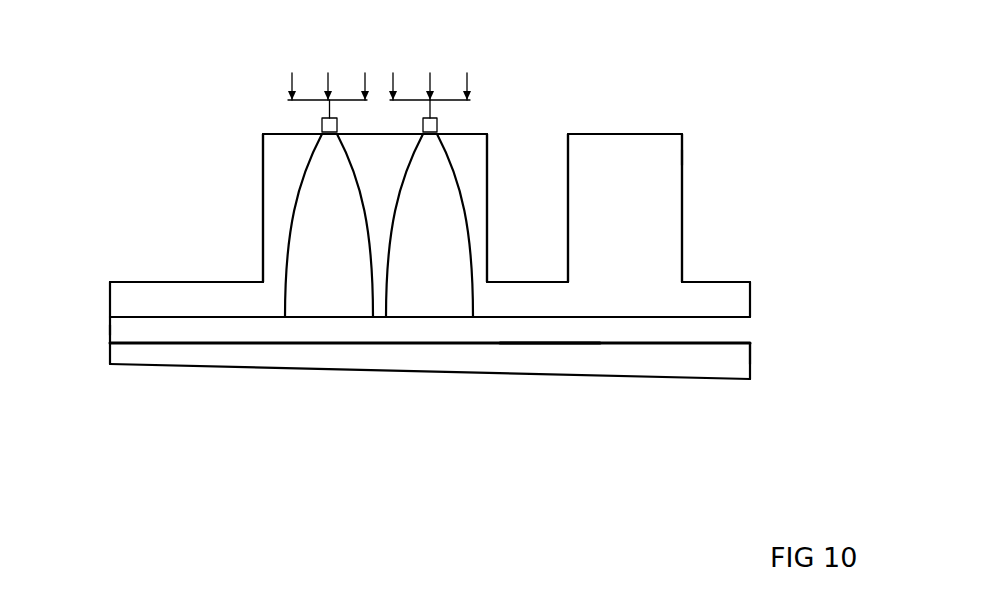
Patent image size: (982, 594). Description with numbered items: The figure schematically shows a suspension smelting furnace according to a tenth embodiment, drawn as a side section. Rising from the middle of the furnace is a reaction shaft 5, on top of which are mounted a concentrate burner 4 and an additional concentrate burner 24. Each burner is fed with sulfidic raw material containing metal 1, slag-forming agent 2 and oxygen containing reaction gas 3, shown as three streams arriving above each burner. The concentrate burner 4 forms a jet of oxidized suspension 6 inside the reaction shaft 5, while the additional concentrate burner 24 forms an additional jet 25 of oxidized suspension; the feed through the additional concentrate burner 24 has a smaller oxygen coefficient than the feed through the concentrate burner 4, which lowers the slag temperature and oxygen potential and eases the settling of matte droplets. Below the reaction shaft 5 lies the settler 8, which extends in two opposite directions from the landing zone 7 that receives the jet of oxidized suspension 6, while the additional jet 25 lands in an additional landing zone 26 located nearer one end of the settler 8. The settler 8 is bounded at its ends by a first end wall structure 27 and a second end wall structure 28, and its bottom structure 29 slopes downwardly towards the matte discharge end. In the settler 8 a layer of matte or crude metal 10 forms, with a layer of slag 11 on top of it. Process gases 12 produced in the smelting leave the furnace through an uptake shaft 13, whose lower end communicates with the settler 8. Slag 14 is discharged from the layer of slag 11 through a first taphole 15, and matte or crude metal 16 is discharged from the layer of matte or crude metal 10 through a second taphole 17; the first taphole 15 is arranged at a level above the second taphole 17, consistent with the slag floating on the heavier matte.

The sulfidic raw material containing metal 1 is at (342, 72).
The slag-forming agent 2 is at (378, 72).
The oxygen containing reaction gas 3 is at (415, 72).
The concentrate burner 4 is at (438, 123).
The reaction shaft 5 is at (263, 155).
The jet of oxidized suspension 6 is at (448, 189).
The landing zone 7 is at (449, 297).
The settler 8 is at (110, 357).
The layer of matte or crude metal 10 is at (567, 358).
The layer of slag 11 is at (625, 335).
The process gases 12 is at (682, 157).
The uptake shaft 13 is at (683, 216).
The slag 14 is at (110, 330).
The first taphole 15 is at (110, 336).
The matte or crude metal 16 is at (750, 358).
The second taphole 17 is at (752, 365).
The additional concentrate burner 24 is at (322, 122).
The additional jet of oxidized suspension 25 is at (326, 198).
The additional landing zone 26 is at (332, 302).
The first end wall structure 27 is at (110, 302).
The second end wall structure 28 is at (752, 307).
The bottom structure 29 is at (297, 368).